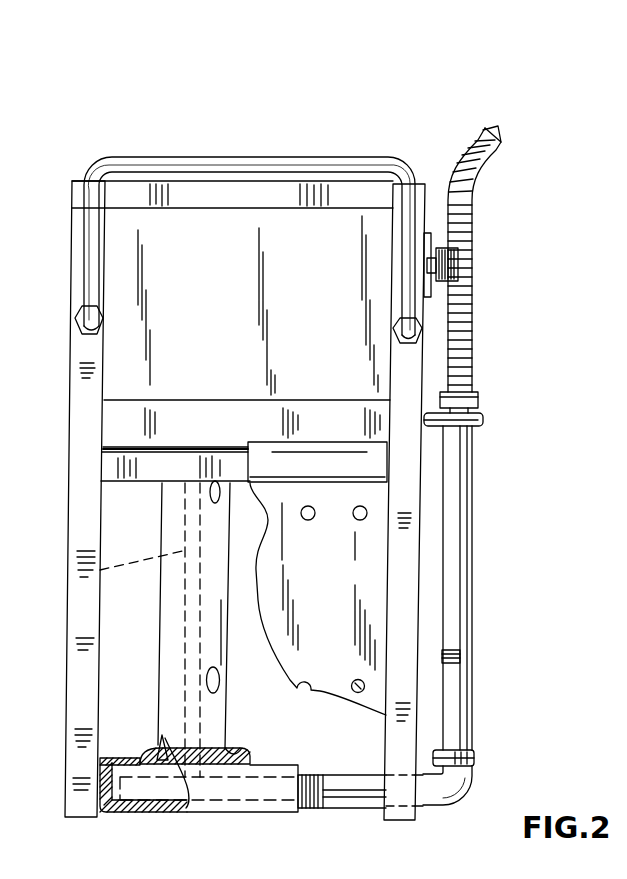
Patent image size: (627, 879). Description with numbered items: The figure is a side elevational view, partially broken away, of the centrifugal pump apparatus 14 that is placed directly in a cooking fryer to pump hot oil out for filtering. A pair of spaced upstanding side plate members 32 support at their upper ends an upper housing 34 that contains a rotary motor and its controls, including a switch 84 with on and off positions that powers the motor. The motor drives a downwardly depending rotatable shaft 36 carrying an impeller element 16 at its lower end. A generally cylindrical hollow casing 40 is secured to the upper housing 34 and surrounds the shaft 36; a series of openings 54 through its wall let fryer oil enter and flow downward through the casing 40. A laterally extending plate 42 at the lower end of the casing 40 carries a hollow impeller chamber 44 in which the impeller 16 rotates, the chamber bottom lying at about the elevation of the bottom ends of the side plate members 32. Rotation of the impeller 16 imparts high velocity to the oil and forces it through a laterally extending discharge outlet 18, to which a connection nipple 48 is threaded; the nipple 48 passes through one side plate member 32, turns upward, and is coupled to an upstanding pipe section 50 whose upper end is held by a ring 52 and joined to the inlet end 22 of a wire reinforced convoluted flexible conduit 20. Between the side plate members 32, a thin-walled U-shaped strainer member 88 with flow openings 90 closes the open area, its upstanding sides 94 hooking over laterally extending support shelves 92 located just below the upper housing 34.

The centrifugal pump apparatus 14 is at (70, 262).
The impeller element 16 is at (150, 793).
The discharge outlet 18 is at (306, 772).
The flexible conduit 20 is at (468, 316).
The inlet end of flexible conduit 22 is at (478, 402).
The side plate members 32 is at (72, 480).
The upper housing 34 is at (122, 340).
The rotatable shaft 36 is at (96, 570).
The cylindrical hollow casing 40 is at (227, 630).
The laterally extending plate 42 is at (120, 757).
The impeller chamber 44 is at (250, 814).
The connection nipple 48 is at (340, 800).
The upstanding pipe section 50 is at (466, 545).
The ring 52 is at (483, 427).
The openings 54 is at (221, 490).
The switch 84 is at (456, 265).
The U-shaped strainer member 88 is at (302, 553).
The flow openings 90 is at (357, 680).
The support shelves 92 is at (188, 447).
The upstanding sides of strainer 94 is at (373, 608).